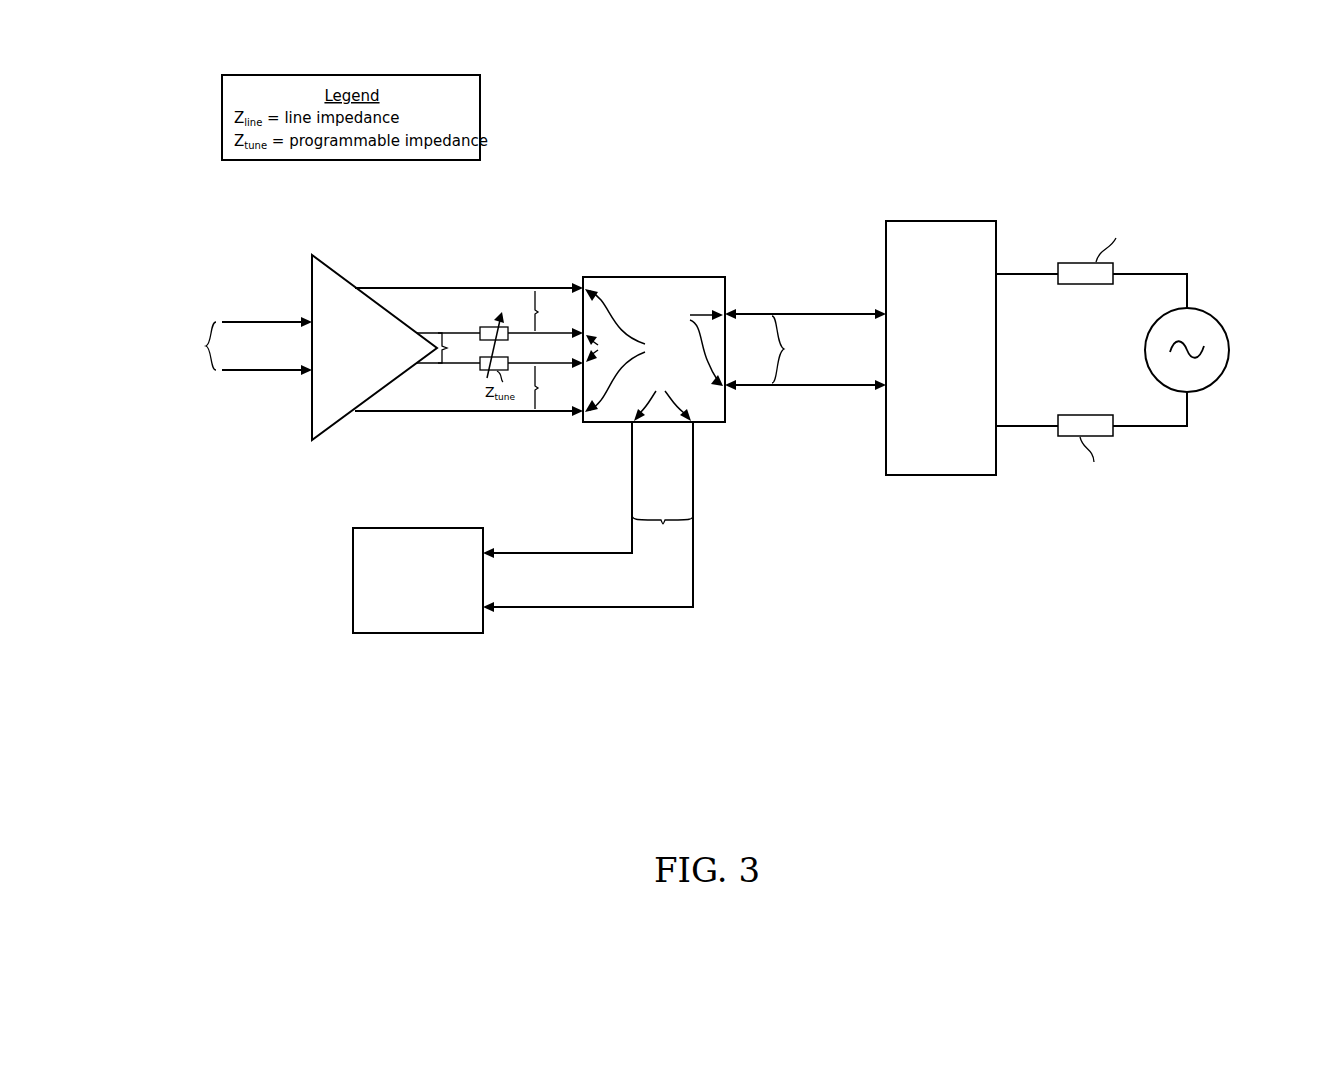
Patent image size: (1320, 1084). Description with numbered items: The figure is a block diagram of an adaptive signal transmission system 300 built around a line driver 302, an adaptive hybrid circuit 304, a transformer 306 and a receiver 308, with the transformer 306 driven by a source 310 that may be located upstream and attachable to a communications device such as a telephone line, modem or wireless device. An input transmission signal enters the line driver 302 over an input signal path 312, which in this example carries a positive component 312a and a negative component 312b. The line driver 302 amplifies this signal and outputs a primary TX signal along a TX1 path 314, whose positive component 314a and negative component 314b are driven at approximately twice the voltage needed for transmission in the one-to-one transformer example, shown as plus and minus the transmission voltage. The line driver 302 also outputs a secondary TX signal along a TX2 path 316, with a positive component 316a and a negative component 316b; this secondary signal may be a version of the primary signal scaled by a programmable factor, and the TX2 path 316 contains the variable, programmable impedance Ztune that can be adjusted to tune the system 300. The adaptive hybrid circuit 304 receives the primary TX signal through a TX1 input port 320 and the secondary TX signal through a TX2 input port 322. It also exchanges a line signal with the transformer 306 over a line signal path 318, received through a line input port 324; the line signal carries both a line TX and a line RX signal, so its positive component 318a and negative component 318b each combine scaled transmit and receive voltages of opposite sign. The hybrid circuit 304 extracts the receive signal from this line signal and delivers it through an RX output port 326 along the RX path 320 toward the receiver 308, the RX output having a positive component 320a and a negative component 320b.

The adaptive signal transmission system 300 is at (1001, 638).
The line driver 302 is at (336, 268).
The adaptive hybrid circuit 304 is at (661, 277).
The transformer 306 is at (939, 220).
The receiver 308 is at (420, 636).
The source 310 is at (1210, 314).
The input signal path 312 is at (193, 346).
The positive component of input transmission signal 312a is at (246, 321).
The negative component of input transmission signal 312b is at (242, 371).
The TX1 path 314 is at (538, 313).
The positive component of TX1 signal 314a is at (426, 287).
The negative component of TX1 signal 314b is at (393, 412).
The TX2 path 316 is at (457, 348).
The positive component of TX2 signal 316a is at (422, 333).
The negative component of TX2 signal 316b is at (421, 366).
The line signal path 318 is at (793, 349).
The positive component of line signal 318a is at (786, 313).
The negative component of line signal 318b is at (794, 388).
The TX1 input port / RX path 320 is at (639, 421).
The positive component of RX output signal 320a is at (695, 472).
The negative component of RX output signal 320b is at (630, 490).
The TX2 input port 322 is at (606, 348).
The line input port 324 is at (691, 346).
The RX output port 326 is at (662, 399).